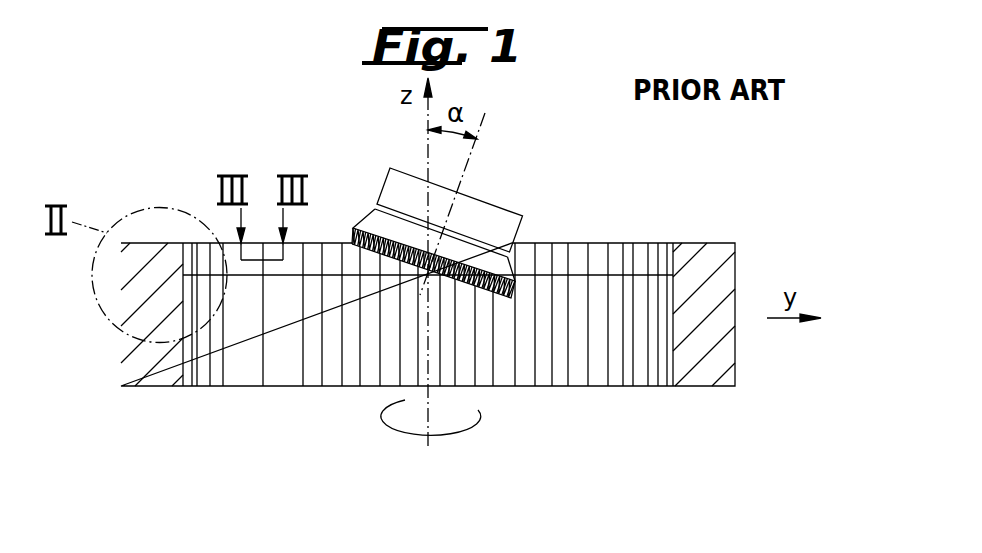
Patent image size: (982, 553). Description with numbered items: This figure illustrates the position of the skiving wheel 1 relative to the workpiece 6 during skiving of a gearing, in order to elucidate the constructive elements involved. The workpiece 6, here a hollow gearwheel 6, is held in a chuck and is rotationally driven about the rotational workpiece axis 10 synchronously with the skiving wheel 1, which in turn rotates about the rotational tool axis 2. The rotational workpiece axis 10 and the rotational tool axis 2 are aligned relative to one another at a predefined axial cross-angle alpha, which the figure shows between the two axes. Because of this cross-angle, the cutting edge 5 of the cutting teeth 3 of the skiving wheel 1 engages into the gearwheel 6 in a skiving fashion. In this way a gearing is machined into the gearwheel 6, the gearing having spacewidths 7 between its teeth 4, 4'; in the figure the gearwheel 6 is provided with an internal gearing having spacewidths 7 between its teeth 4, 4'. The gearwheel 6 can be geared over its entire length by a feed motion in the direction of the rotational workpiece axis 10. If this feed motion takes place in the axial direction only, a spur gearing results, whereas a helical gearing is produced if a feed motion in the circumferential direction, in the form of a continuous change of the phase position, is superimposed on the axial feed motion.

The skiving wheel 1 is at (500, 203).
The rotational tool axis 2 is at (470, 162).
The cutting teeth 3 is at (485, 275).
The tooth 4 is at (228, 348).
The tooth 4' is at (281, 348).
The cutting edge 5 is at (350, 241).
The workpiece 6 is at (724, 278).
The spacewidth 7 is at (260, 243).
The rotational workpiece axis 10 is at (428, 343).